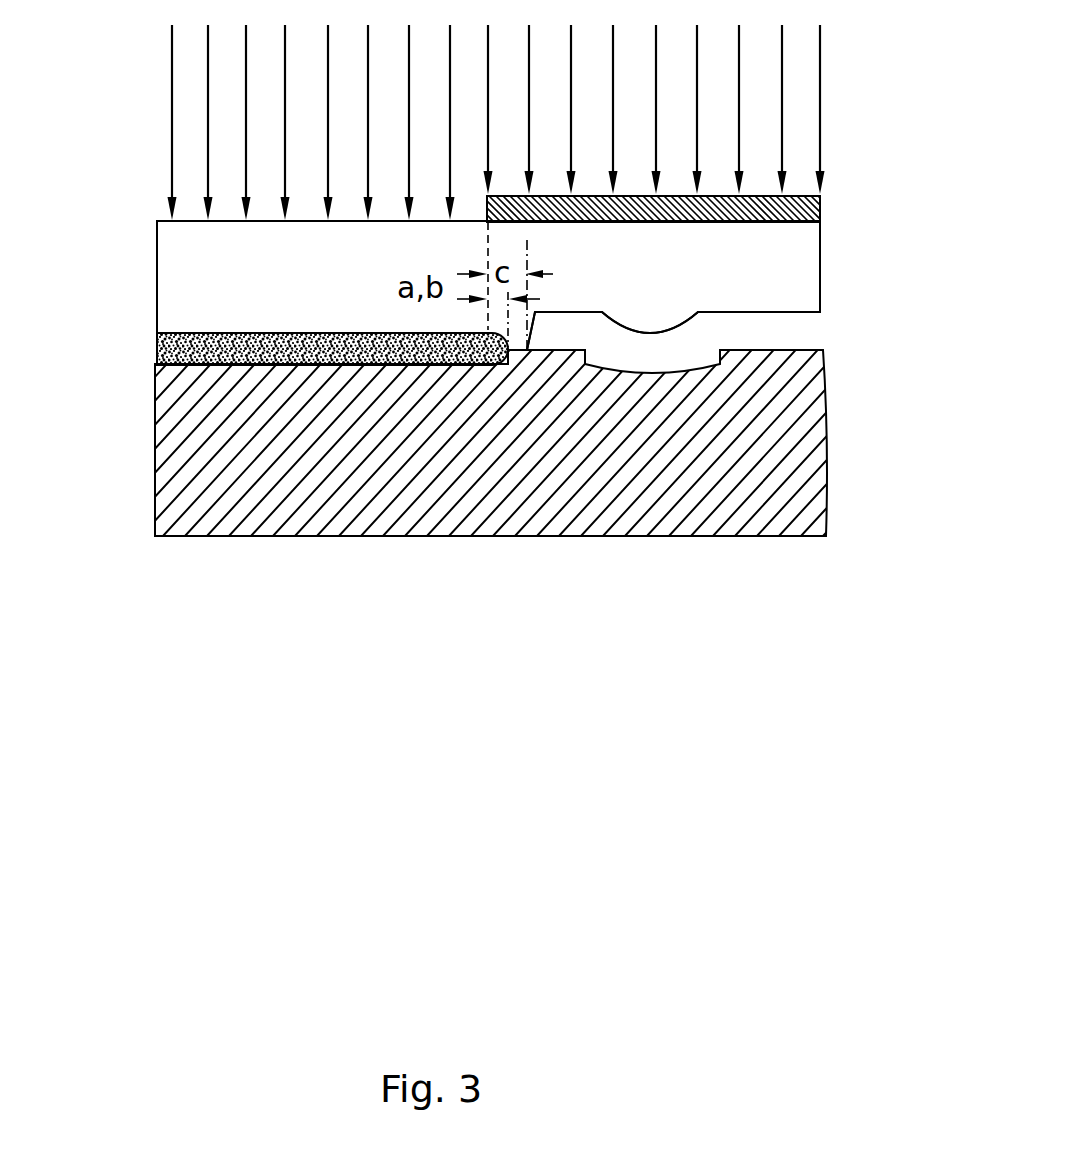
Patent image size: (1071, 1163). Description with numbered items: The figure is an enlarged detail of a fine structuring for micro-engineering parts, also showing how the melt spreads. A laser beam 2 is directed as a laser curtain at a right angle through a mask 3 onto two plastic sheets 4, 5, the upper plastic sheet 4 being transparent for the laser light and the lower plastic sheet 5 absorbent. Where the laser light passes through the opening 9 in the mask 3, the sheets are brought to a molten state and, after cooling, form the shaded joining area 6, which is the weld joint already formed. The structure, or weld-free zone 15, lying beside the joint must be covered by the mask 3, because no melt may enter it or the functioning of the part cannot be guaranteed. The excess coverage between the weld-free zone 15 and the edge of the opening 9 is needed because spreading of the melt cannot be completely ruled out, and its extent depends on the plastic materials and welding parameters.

The laser beam 2 is at (800, 87).
The mask 3 is at (820, 204).
The plastic sheet 4 is at (187, 280).
The plastic sheet 5 is at (203, 453).
The joining area 6 is at (185, 350).
The opening 9 is at (387, 199).
The weld-free zone 15 is at (793, 335).